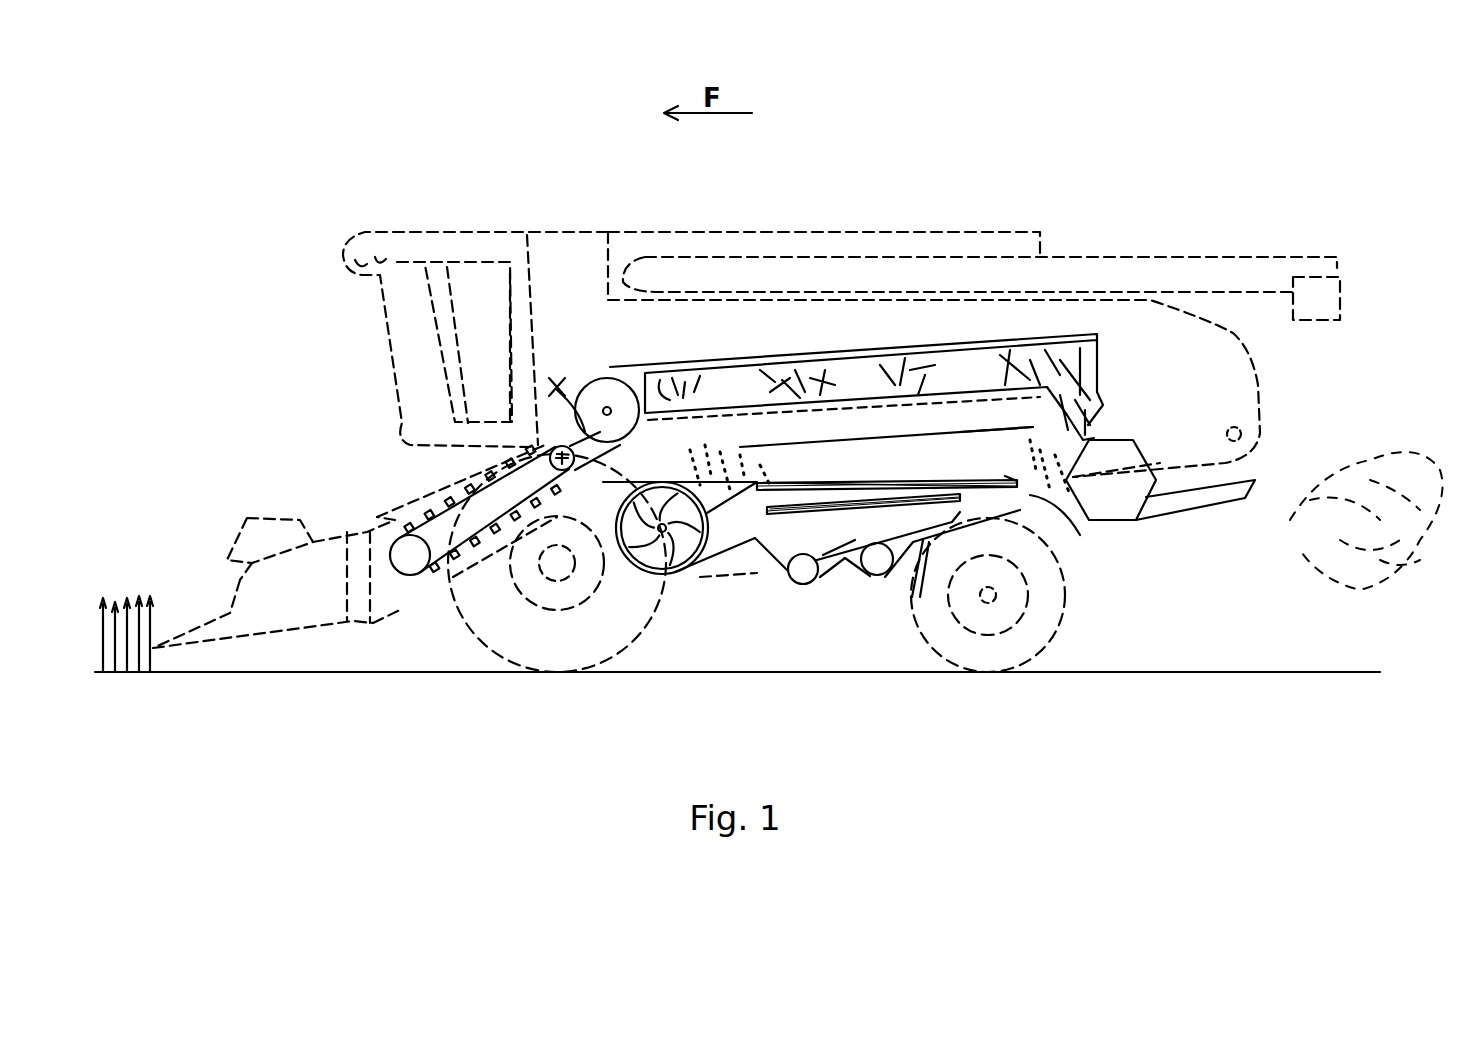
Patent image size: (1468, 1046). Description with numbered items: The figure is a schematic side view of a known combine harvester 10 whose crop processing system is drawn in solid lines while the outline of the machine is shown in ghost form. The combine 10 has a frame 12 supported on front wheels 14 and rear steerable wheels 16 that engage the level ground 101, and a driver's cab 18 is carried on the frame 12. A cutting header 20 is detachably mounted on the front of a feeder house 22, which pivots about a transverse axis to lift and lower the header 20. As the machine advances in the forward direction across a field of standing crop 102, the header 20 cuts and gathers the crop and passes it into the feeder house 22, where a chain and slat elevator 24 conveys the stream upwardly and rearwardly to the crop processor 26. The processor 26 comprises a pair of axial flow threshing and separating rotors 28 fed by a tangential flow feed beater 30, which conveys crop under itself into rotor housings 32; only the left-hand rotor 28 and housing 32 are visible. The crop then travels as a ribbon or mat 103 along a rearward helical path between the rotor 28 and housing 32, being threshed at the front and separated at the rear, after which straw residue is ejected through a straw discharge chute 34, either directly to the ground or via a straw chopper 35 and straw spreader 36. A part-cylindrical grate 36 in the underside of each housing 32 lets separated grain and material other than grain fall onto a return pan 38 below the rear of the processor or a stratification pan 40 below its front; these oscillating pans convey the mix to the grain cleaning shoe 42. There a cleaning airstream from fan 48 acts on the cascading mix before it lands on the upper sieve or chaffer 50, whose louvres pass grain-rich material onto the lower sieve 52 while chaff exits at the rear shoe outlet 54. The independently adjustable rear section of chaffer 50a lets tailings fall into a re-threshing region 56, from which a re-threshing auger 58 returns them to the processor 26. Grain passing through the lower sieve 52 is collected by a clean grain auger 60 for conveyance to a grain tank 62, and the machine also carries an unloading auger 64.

The combine harvester 10 is at (371, 163).
The frame 12 is at (758, 576).
The front wheels 14 is at (488, 652).
The rear steerable wheels 16 is at (1045, 648).
The driver's cab 18 is at (465, 238).
The cutting header 20 is at (253, 483).
The feeder house 22 is at (417, 500).
The elevator 24 is at (442, 580).
The crop processor 26 is at (673, 352).
The axial flow threshing and separating rotor 28 is at (833, 360).
The feed beater 30 is at (600, 378).
The rotor housing 32 is at (752, 360).
The straw discharge chute 34 is at (1088, 392).
The straw chopper 35 is at (1112, 523).
The straw spreader / part-cylindrical grate 36 is at (672, 420).
The return pan 38 is at (975, 430).
The stratification pan 40 is at (630, 487).
The grain cleaning shoe 42 is at (840, 565).
The fan 48 is at (676, 572).
The upper sieve or chaffer 50 is at (877, 483).
The rear section of chaffer 50a is at (975, 479).
The lower sieve 52 is at (850, 508).
The shoe outlet 54 is at (1064, 529).
The re-threshing region 56 is at (910, 600).
The re-threshing auger 58 is at (877, 575).
The clean grain auger 60 is at (806, 584).
The grain tank 62 is at (738, 231).
The unloading auger 64 is at (1178, 257).
The ground 101 is at (246, 680).
The standing crop 102 is at (137, 598).
The ribbon or mat 103 is at (915, 360).